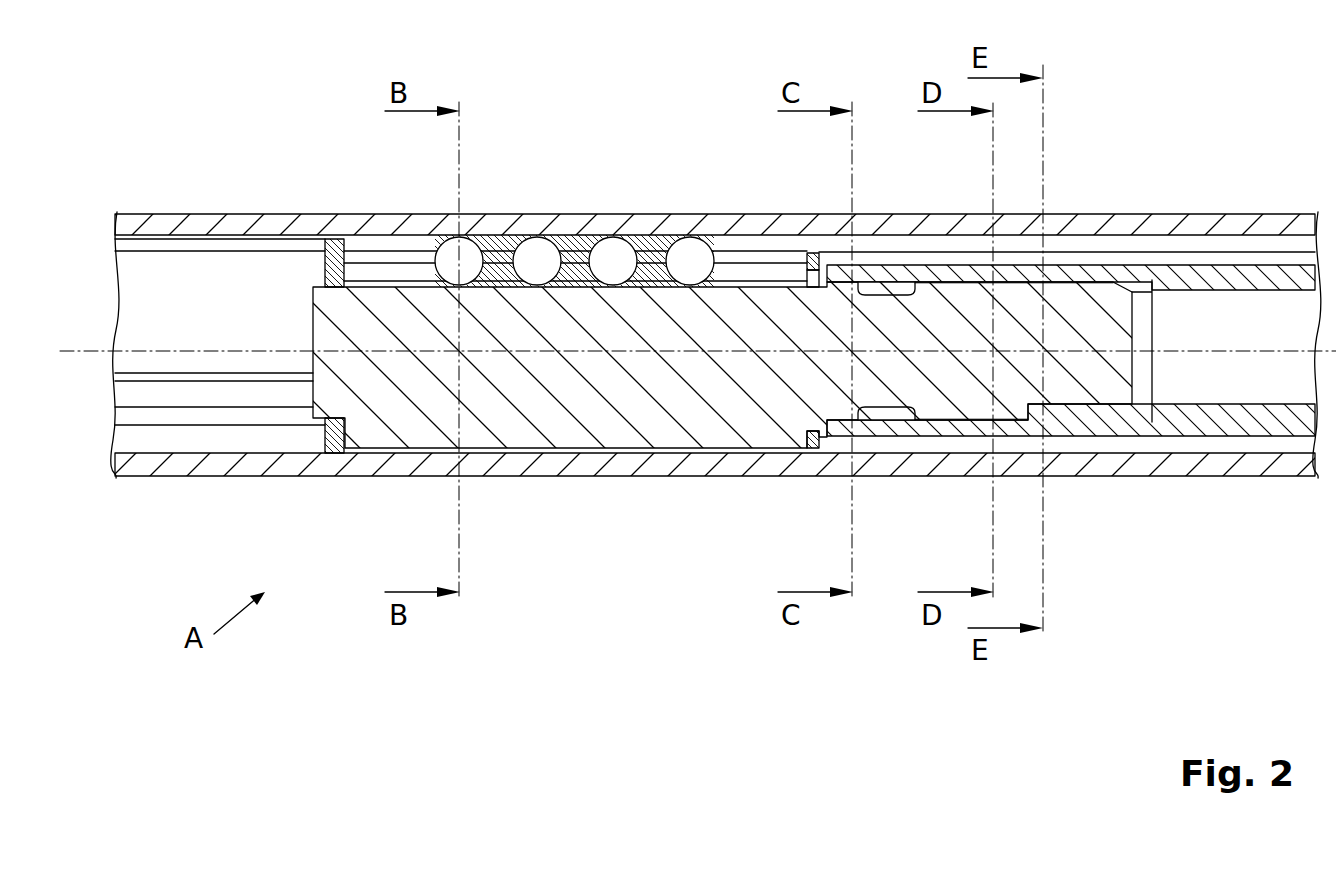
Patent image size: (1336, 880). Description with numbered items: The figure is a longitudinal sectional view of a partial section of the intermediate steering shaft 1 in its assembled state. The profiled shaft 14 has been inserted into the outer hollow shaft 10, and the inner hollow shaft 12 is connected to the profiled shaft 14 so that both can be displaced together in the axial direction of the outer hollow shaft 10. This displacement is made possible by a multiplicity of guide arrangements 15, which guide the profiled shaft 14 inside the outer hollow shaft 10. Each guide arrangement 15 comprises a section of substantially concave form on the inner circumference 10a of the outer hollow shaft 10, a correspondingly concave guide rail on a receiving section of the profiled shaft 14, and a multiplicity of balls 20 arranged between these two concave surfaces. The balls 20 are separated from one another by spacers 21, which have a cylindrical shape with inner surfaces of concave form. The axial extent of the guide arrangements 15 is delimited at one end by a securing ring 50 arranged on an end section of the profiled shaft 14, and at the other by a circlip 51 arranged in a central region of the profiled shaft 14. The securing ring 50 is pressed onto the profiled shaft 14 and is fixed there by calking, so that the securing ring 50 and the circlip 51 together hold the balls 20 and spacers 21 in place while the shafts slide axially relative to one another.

The intermediate steering shaft 1 is at (1106, 102).
The outer hollow shaft 10 is at (1167, 222).
The inner circumference 10a is at (1112, 240).
The inner hollow shaft 12 is at (1229, 278).
The profiled shaft 14 is at (574, 440).
The guide arrangements 15 is at (656, 228).
The balls 20 is at (613, 248).
The spacers 21 is at (577, 240).
The securing ring 50 is at (336, 440).
The circlip 51 is at (816, 447).